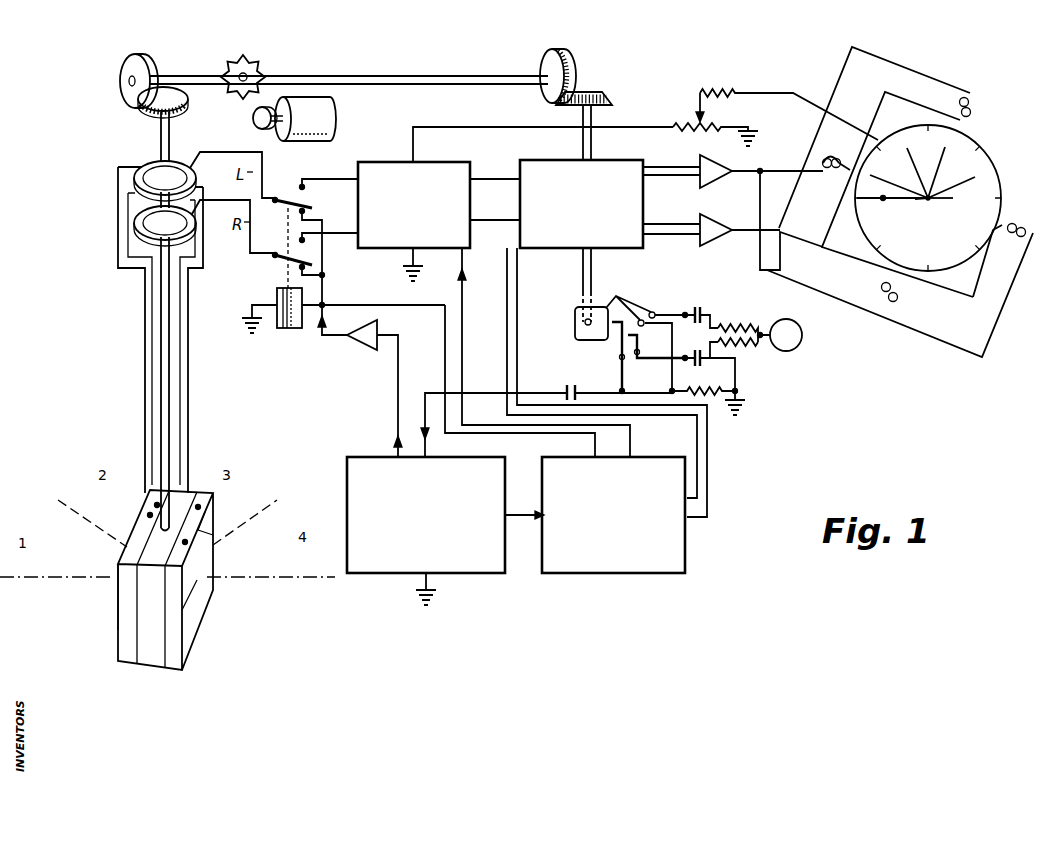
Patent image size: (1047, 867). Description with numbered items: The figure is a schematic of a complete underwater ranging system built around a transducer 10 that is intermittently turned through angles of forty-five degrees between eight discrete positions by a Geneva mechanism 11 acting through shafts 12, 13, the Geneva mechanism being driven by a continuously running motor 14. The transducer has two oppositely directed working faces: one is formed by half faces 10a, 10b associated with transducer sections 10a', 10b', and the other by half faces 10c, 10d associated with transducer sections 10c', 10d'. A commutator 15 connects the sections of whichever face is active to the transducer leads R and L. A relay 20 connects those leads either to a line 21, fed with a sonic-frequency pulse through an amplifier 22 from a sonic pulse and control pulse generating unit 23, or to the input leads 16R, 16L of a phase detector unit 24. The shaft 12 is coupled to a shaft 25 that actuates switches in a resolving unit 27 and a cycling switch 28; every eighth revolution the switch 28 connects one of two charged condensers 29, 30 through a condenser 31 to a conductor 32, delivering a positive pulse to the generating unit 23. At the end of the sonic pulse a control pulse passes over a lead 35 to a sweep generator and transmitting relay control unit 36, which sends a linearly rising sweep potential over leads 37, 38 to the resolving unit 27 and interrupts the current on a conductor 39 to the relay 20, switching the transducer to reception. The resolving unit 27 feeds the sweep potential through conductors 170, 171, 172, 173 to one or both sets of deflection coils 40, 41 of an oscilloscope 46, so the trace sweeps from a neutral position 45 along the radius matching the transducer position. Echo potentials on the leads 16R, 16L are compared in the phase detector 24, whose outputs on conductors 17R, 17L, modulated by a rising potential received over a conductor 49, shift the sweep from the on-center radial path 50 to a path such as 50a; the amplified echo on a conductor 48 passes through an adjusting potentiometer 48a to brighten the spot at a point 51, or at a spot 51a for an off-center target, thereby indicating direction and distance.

The transducer 10 is at (150, 654).
The half face 10a is at (128, 519).
The transducer section 10a' is at (136, 495).
The half face 10b is at (97, 574).
The transducer section 10b' is at (95, 607).
The half face 10c is at (210, 611).
The transducer section 10c' is at (217, 576).
The half face 10d is at (223, 541).
The transducer section 10d' is at (228, 497).
The Geneva mechanism 11 is at (255, 51).
The shaft 12 is at (409, 73).
The shaft 13 is at (162, 327).
The motor 14 is at (320, 113).
The commutator 15 is at (117, 192).
The input lead 16L is at (337, 178).
The input lead 16R is at (345, 238).
The conductor 17L is at (491, 176).
The conductor 17R is at (489, 219).
The relay 20 is at (277, 293).
The line 21 is at (325, 292).
The amplifier 22 is at (364, 347).
The sonic pulse and control pulse generating unit 23 is at (378, 574).
The phase detector unit 24 is at (377, 163).
The shaft 25 is at (596, 115).
The resolving unit 27 is at (627, 160).
The cycling switch 28 is at (577, 308).
The charged condenser 29 is at (697, 306).
The charged condenser 30 is at (704, 366).
The condenser 31 is at (578, 389).
The conductor 32 is at (437, 391).
The lead 35 is at (516, 512).
The sweep generator and transmitting relay control unit 36 is at (604, 574).
The lead 37 is at (506, 289).
The lead 38 is at (517, 274).
The conductor 39 is at (441, 307).
The deflection coils 40 is at (836, 158).
The deflection coils 41 is at (971, 108).
The neutral position 45 is at (952, 202).
The oscilloscope 46 is at (999, 180).
The conductor 48 is at (466, 127).
The adjusting potentiometer 48a is at (697, 112).
The conductor 49 is at (460, 289).
The radial path 50 is at (925, 186).
The radial path 50a is at (917, 202).
The brightened point 51 is at (893, 190).
The brightened spot 51a is at (886, 202).
The conductor 170 is at (677, 165).
The conductor 171 is at (686, 177).
The conductor 172 is at (692, 223).
The conductor 173 is at (687, 236).